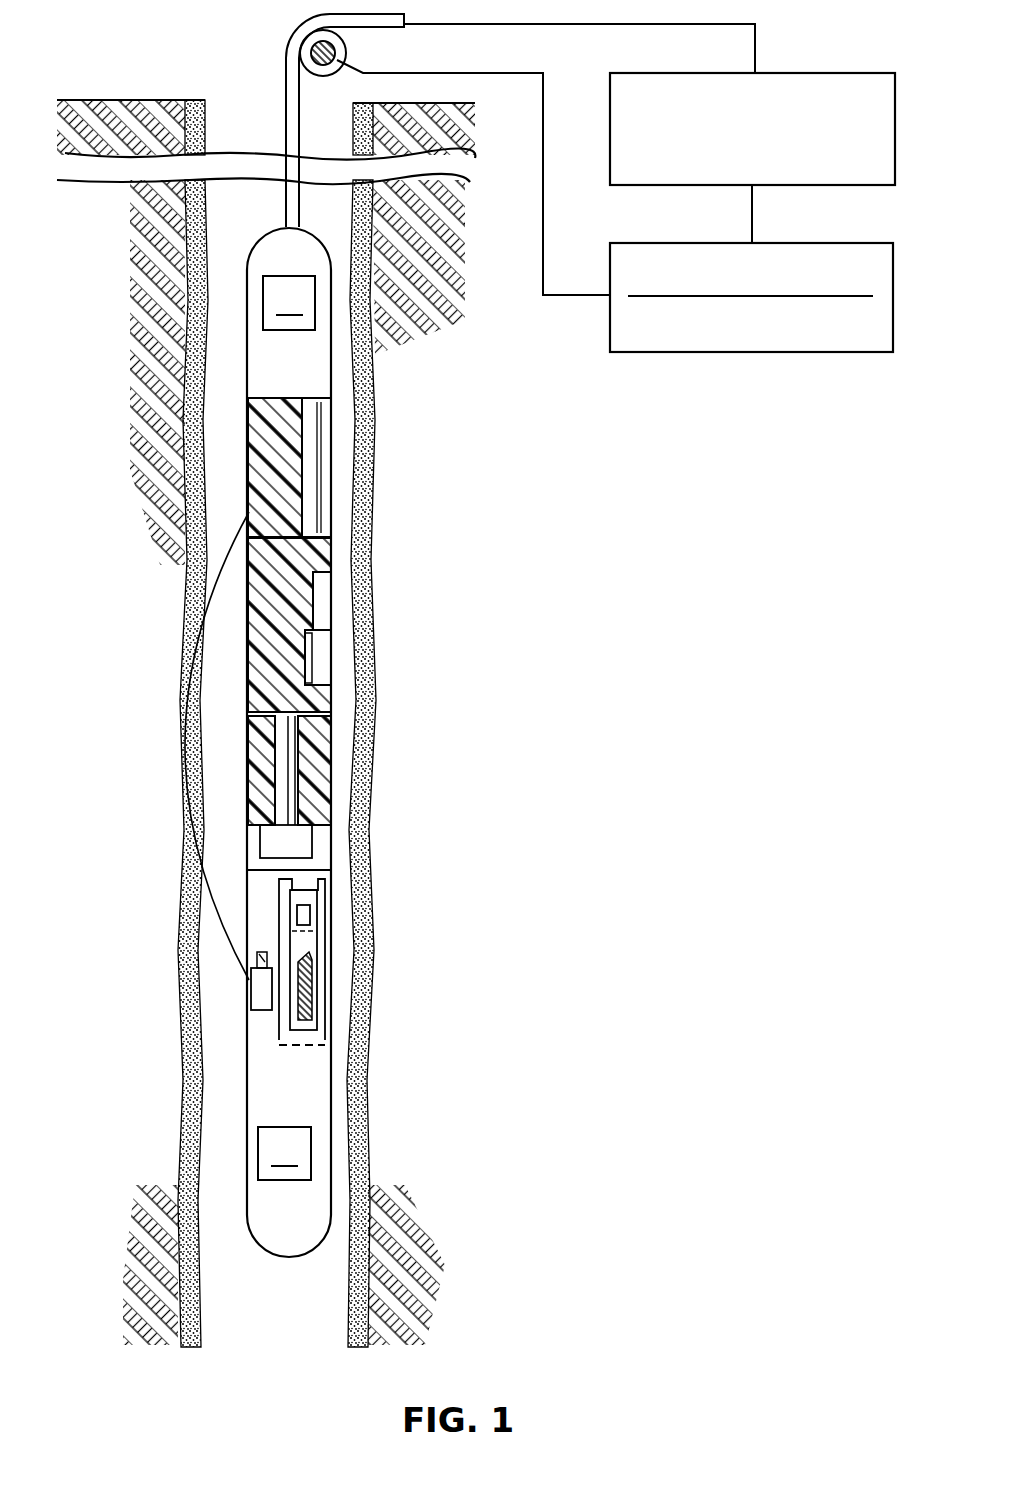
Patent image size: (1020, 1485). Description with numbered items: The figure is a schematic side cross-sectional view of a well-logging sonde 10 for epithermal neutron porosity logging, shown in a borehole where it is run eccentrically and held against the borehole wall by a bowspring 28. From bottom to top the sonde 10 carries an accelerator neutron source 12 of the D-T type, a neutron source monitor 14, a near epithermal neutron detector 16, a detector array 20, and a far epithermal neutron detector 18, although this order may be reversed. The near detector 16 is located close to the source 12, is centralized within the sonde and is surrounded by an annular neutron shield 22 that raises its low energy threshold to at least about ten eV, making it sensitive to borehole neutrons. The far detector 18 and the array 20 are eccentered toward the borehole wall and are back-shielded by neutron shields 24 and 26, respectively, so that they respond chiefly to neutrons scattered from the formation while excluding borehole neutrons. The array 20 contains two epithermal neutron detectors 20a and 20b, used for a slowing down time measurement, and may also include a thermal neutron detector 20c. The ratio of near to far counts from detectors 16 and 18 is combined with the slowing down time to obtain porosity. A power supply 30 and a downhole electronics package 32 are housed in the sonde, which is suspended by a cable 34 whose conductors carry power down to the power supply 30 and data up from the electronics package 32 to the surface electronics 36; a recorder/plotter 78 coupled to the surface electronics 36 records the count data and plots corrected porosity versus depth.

The tool 10 is at (334, 372).
The accelerator neutron source 12 is at (318, 948).
The neutron source monitor 14 is at (250, 993).
The near epithermal neutron detector 16 is at (290, 783).
The far epithermal neutron detector 18 is at (322, 475).
The detector array 20 is at (267, 649).
The epithermal neutron detector 20a is at (322, 596).
The epithermal neutron detector 20b is at (320, 668).
The thermal neutron detector 20c is at (305, 643).
The annular neutron shield 22 is at (253, 783).
The neutron shield 24 is at (255, 467).
The neutron shield 26 is at (253, 687).
The bowspring 28 is at (207, 872).
The power supply 30 is at (284, 1153).
The downhole electronics package 32 is at (289, 303).
The cable 34 is at (285, 70).
The surface electronics 36 is at (838, 72).
The recorder plotter 78 is at (740, 354).